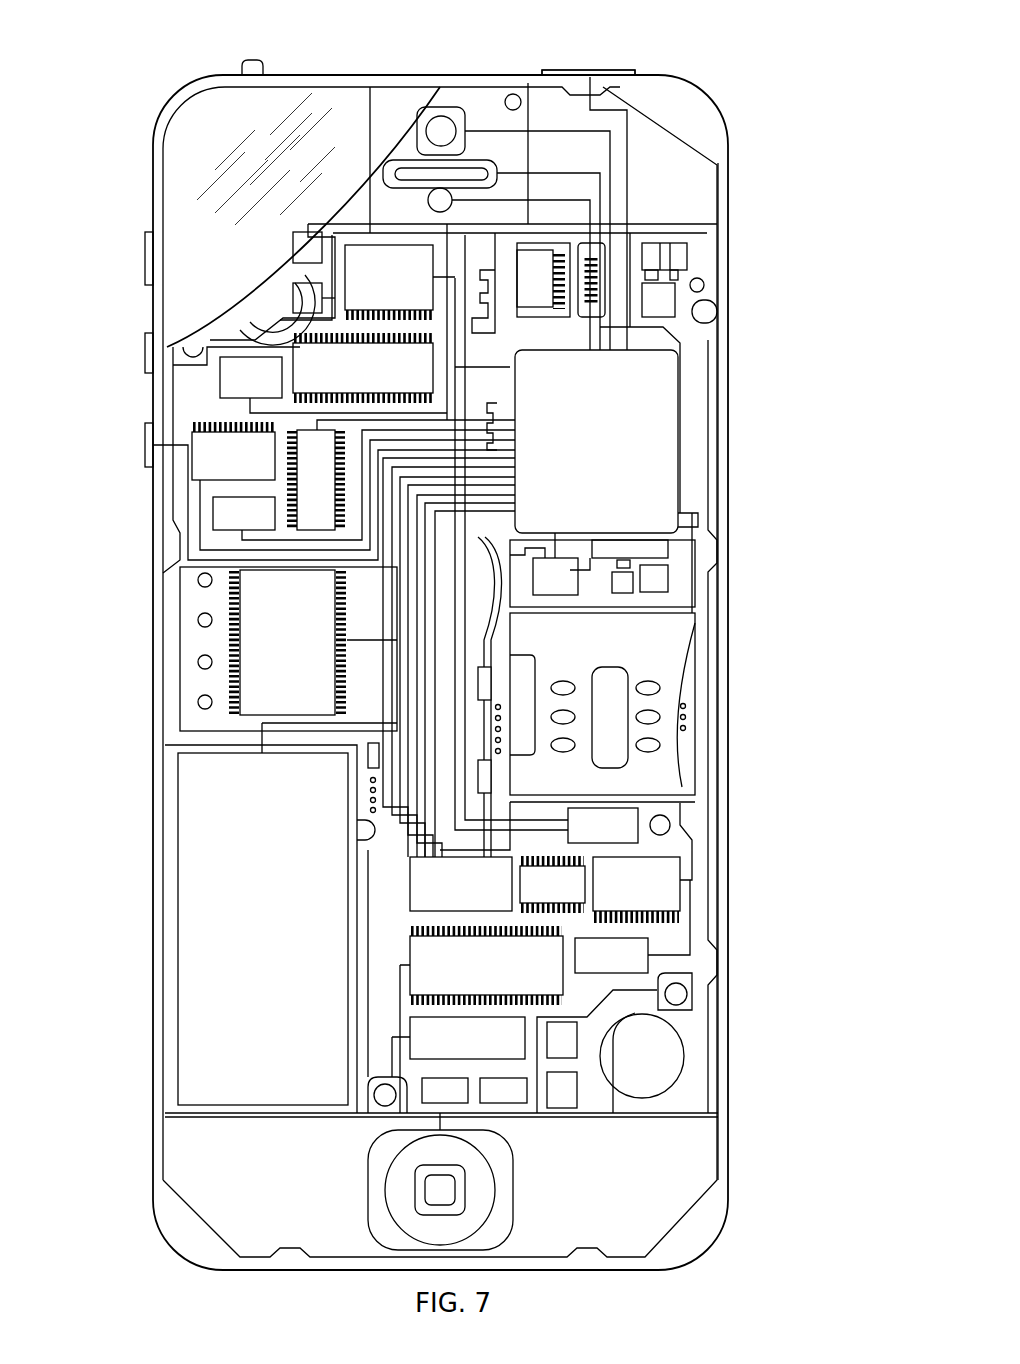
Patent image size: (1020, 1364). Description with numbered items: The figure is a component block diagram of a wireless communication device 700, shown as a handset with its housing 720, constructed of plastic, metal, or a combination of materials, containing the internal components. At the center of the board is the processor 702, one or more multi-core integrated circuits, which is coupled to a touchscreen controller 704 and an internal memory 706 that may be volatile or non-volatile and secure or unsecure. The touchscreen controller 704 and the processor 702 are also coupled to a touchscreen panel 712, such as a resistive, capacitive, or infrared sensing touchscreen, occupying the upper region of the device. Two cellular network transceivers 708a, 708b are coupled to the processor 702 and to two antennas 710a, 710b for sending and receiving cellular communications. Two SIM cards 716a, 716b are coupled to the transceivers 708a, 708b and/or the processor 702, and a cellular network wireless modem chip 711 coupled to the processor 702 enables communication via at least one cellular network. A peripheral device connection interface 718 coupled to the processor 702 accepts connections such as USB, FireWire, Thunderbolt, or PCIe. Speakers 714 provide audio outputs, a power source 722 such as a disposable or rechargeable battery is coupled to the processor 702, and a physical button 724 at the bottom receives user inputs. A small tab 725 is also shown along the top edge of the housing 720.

The wireless communication device 700 is at (98, 70).
The processor 702 is at (596, 441).
The touchscreen controller 704 is at (389, 280).
The internal memory 706 is at (287, 642).
The cellular network transceiver 708a is at (620, 258).
The cellular network transceiver 708b is at (316, 480).
The antenna 710a is at (363, 368).
The antenna 710b is at (665, 310).
The cellular network wireless modem chip 711 is at (486, 965).
The touchscreen panel 712 is at (190, 172).
The speakers 714 is at (390, 165).
The SIM card 716a is at (603, 825).
The SIM card 716b is at (611, 955).
The peripheral device connection interface 718 is at (467, 1038).
The housing 720 is at (731, 1146).
The power source 722 is at (261, 929).
The physical button 724 is at (450, 1197).
The top button 725 is at (590, 68).